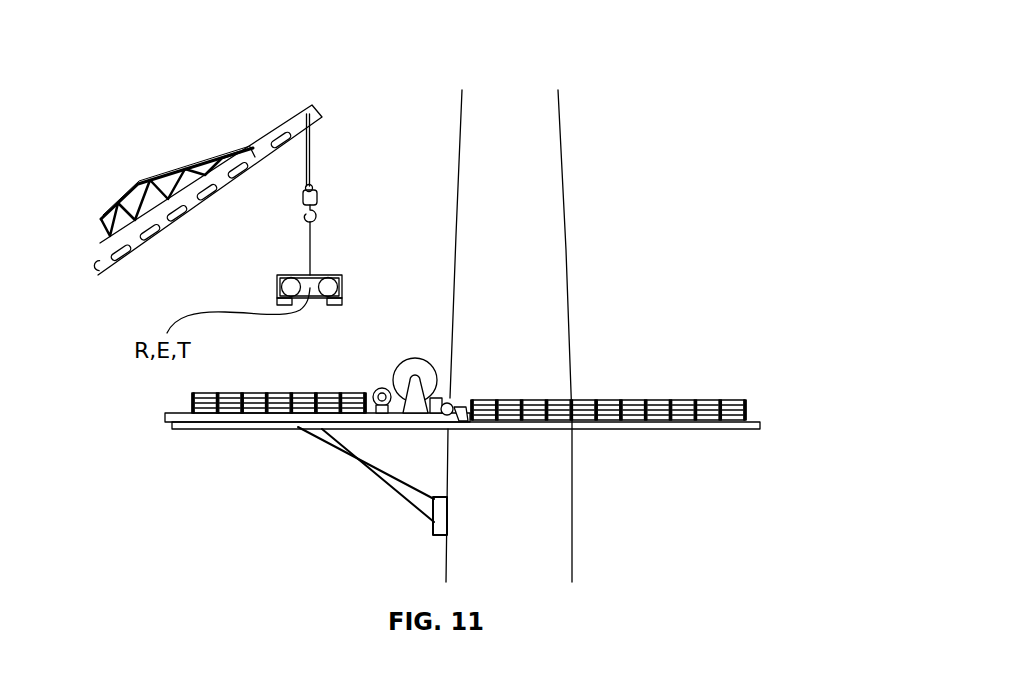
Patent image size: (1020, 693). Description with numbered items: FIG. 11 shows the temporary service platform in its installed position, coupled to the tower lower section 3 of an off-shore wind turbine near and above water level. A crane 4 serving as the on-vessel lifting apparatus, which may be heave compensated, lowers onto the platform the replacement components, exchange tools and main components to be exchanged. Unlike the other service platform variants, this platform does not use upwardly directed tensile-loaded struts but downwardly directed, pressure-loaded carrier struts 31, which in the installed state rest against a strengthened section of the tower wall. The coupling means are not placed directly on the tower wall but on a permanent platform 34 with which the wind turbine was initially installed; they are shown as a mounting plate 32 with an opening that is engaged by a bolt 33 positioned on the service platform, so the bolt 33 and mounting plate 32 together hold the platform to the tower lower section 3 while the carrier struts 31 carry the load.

The crane 4 is at (300, 120).
The tower lower section 3 is at (537, 203).
The carrier struts 31 is at (373, 475).
The mounting plate 32 is at (435, 416).
The bolt 33 is at (455, 404).
The permanent platform 34 is at (703, 430).